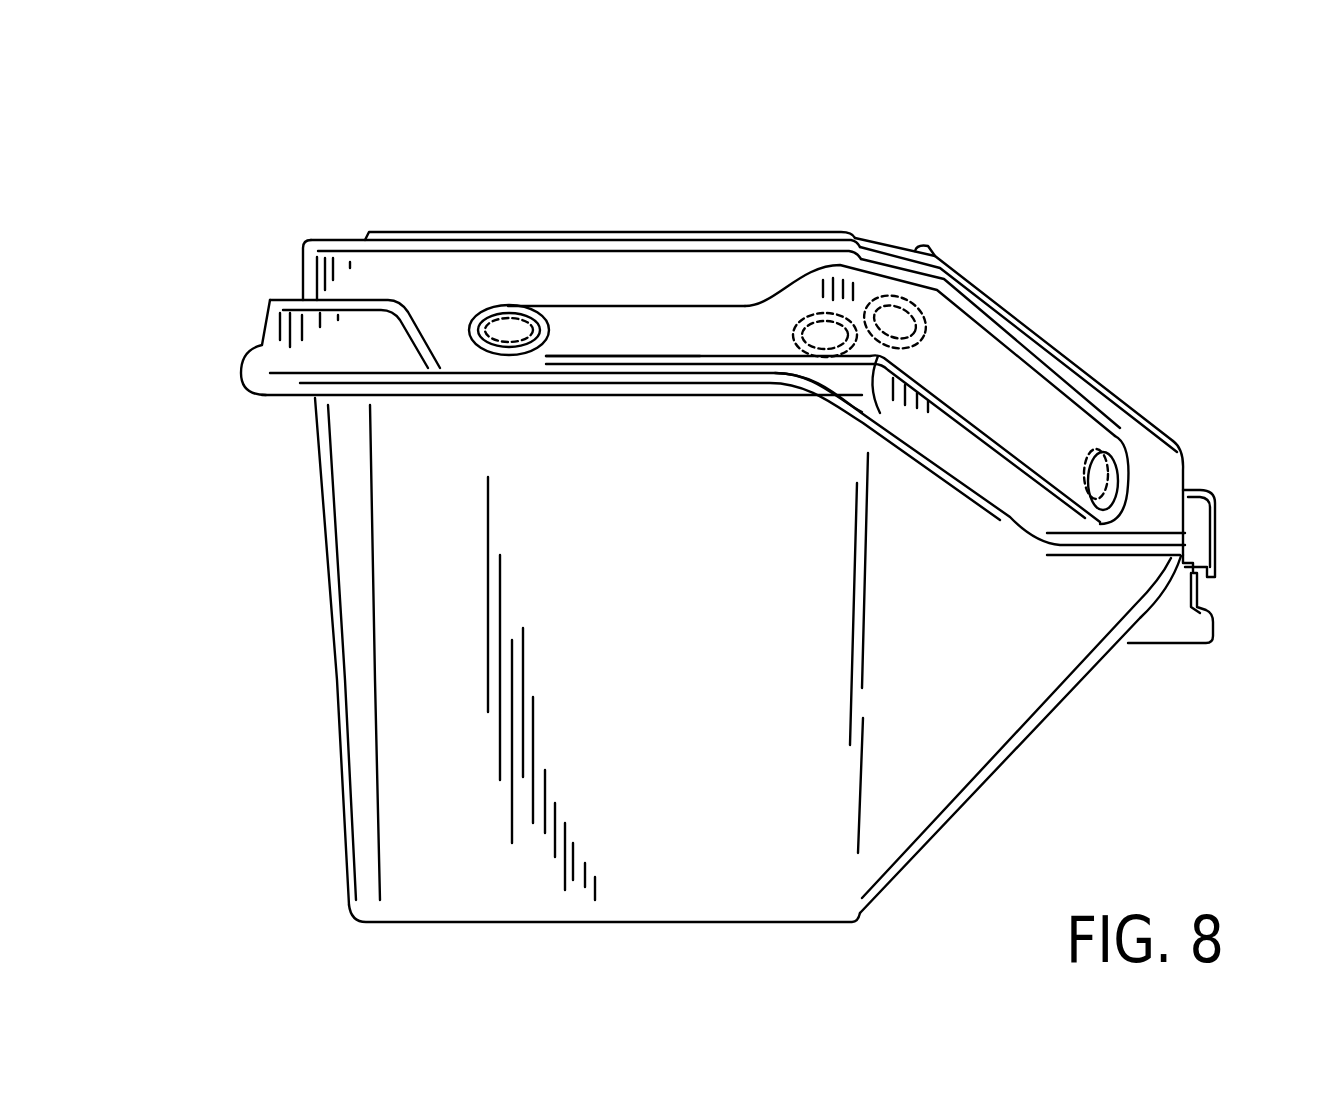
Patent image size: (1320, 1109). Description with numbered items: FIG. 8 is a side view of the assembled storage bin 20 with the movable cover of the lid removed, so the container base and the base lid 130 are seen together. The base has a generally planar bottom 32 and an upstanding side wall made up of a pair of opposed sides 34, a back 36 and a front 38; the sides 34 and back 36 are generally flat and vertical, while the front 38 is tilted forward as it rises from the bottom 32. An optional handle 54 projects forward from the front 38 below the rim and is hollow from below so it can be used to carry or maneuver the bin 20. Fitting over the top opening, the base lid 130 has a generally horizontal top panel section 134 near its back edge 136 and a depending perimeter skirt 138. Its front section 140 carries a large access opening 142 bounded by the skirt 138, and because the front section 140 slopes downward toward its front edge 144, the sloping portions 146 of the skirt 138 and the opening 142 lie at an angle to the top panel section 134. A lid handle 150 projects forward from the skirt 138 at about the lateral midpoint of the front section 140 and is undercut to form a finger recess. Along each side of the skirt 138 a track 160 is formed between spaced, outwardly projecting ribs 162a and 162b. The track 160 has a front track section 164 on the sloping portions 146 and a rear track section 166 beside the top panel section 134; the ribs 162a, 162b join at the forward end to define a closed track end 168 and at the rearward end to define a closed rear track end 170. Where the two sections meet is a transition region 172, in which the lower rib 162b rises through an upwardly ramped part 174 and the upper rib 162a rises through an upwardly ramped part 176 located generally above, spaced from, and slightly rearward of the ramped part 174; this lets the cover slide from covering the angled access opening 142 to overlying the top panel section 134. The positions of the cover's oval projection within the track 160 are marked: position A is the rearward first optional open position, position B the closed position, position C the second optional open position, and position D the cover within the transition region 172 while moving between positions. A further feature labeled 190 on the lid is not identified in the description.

The storage bin 20 is at (172, 165).
The bottom 32 is at (681, 924).
The sides 34 is at (432, 703).
The back 36 is at (330, 637).
The front 38 is at (1036, 742).
The handle 54 is at (1212, 626).
The base lid 130 is at (303, 240).
The top panel section 134 is at (354, 240).
The back edge 136 is at (290, 278).
The perimeter skirt 138 is at (482, 274).
The front section 140 is at (983, 340).
The access opening 142 is at (1103, 385).
The front edge 144 is at (1186, 466).
The sloping portions 146 is at (992, 497).
The lid handle 150 is at (1210, 520).
The track 160 is at (683, 363).
The upper projecting rib 162a is at (749, 293).
The lower projecting rib 162b is at (790, 386).
The front track section 164 is at (1010, 365).
The rear track section 166 is at (657, 327).
The closed track end 168 is at (1118, 432).
The closed rear track end 170 is at (484, 305).
The transition region 172 is at (905, 300).
The upwardly ramped part 174 is at (868, 412).
The upwardly ramped part 176 is at (838, 300).
The top rail 190 is at (668, 238).
The position A is at (545, 342).
The position B is at (792, 338).
The position C is at (1083, 493).
The position D is at (1010, 403).